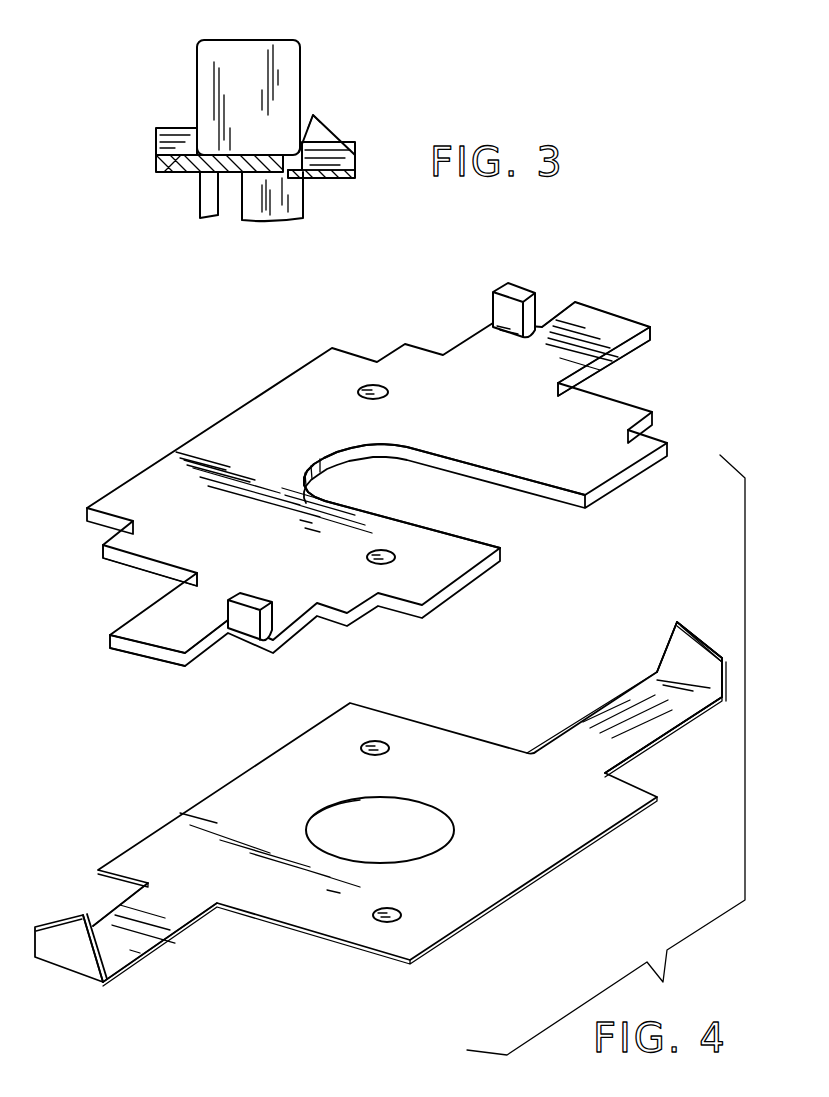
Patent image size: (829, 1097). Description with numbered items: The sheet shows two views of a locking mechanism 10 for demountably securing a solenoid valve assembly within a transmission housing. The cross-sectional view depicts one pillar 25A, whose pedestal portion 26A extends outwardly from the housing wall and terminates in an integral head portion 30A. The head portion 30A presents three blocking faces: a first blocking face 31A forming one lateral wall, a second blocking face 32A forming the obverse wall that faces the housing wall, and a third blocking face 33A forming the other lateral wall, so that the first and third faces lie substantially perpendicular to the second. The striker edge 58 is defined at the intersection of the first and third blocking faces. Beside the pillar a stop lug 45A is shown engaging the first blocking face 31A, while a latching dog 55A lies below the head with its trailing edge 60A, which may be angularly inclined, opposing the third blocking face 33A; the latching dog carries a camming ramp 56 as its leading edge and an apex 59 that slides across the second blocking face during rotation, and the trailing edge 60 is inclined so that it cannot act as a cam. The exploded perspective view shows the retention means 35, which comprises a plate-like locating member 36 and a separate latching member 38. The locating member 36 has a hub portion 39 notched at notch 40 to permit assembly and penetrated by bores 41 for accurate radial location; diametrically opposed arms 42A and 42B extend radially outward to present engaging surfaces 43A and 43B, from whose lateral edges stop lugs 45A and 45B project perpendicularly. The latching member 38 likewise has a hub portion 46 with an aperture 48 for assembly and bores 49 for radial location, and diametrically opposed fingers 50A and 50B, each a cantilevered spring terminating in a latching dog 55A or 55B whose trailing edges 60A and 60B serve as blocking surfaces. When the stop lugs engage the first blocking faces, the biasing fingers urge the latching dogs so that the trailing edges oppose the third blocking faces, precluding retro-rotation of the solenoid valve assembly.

In FIG. 3, the locking mechanism 10 is at (326, 55).
In FIG. 3, the pillar 25A is at (306, 38).
In FIG. 3, the head portion 30A is at (252, 58).
In FIG. 3, the first blocking face 31A is at (197, 62).
In FIG. 3, the third blocking face 33A is at (302, 75).
In FIG. 3, the stop lug 45A is at (178, 130).
In FIG. 4, the stop lug 45A is at (512, 290).
In FIG. 3, the trailing edge 60 is at (303, 123).
In FIG. 3, the apex 59 is at (314, 110).
In FIG. 4, the apex 59 is at (697, 630).
In FIG. 3, the camming ramp 56 is at (340, 137).
In FIG. 4, the camming ramp 56 is at (718, 655).
In FIG. 3, the latching dog 55A is at (337, 163).
In FIG. 4, the latching dog 55A is at (680, 668).
In FIG. 3, the striker edge 58 is at (190, 158).
In FIG. 3, the pedestal portion 26A is at (208, 198).
In FIG. 3, the arm 42A is at (217, 177).
In FIG. 4, the arm 42A is at (608, 362).
In FIG. 3, the second blocking face 32A is at (245, 177).
In FIG. 3, the finger 50A is at (335, 180).
In FIG. 4, the finger 50A is at (622, 745).
In FIG. 4, the retention means 35 is at (360, 468).
In FIG. 4, the locating member 36 is at (259, 385).
In FIG. 4, the hub portion 39 is at (253, 422).
In FIG. 4, the notch 40 is at (362, 510).
In FIG. 4, the bores 41 is at (385, 387).
In FIG. 4, the engaging surface 43A is at (603, 318).
In FIG. 4, the arm 42B is at (142, 612).
In FIG. 4, the engaging surface 43B is at (160, 632).
In FIG. 4, the stop lug 45B is at (241, 602).
In FIG. 4, the latching member 38 is at (201, 795).
In FIG. 4, the hub portion 46 is at (525, 858).
In FIG. 4, the aperture 48 is at (405, 806).
In FIG. 4, the bores 49 is at (382, 745).
In FIG. 4, the finger 50B is at (130, 942).
In FIG. 4, the latching dog 55B is at (63, 950).
In FIG. 4, the trailing edge 60A is at (668, 648).
In FIG. 4, the trailing edge 60B is at (95, 948).